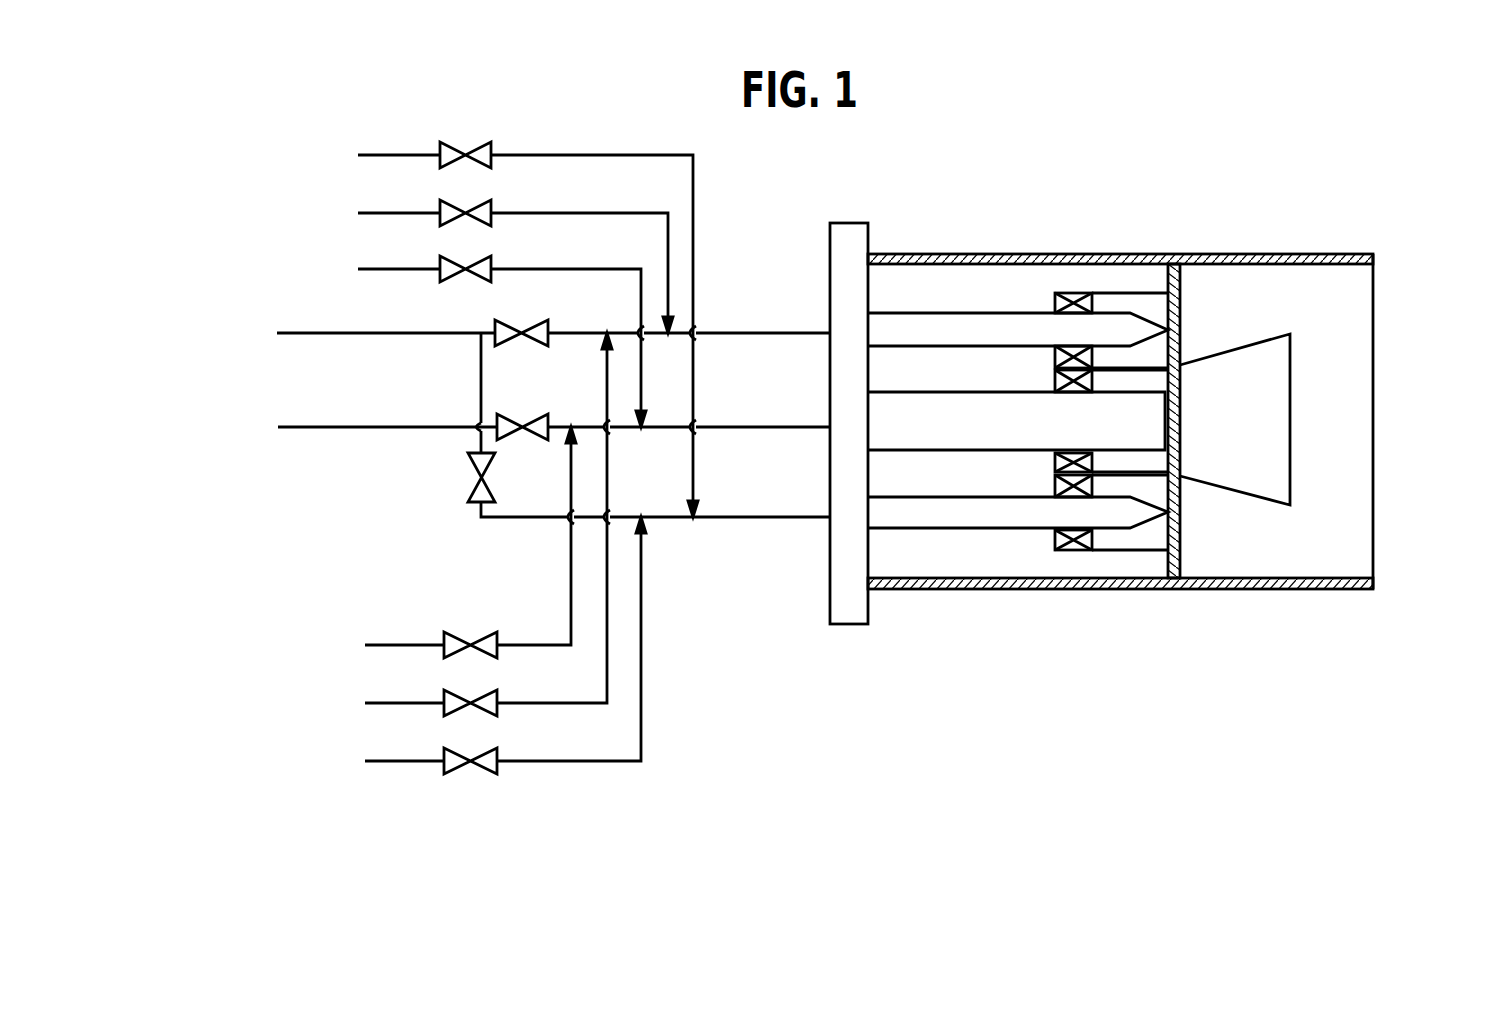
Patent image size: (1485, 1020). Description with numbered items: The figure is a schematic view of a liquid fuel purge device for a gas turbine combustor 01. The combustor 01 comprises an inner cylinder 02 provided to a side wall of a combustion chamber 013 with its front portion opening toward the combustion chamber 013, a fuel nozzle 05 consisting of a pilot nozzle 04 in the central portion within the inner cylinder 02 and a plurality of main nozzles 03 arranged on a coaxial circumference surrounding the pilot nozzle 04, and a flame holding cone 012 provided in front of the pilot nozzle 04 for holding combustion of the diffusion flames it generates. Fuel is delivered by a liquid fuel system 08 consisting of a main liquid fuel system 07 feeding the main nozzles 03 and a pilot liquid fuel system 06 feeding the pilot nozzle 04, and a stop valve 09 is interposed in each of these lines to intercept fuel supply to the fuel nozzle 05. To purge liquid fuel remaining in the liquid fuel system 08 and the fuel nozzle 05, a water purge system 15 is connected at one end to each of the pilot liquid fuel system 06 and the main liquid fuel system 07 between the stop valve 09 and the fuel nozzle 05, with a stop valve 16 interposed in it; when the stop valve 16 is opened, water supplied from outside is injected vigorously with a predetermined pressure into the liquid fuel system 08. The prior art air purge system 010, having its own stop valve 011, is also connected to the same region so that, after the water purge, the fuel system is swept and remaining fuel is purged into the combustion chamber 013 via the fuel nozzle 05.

The combustor 01 is at (1153, 228).
The inner cylinder 02 is at (956, 256).
The main nozzles 03 is at (960, 330).
The pilot nozzle 04 is at (980, 420).
The fuel nozzle 05 is at (1073, 143).
The pilot liquid fuel system 06 is at (539, 415).
The main liquid fuel system 07 is at (539, 318).
The liquid fuel system 08 is at (238, 310).
The stop valve 09 is at (470, 500).
The air purge system 010 is at (362, 613).
The stop valve 011 is at (499, 758).
The flame holding cone 012 is at (1230, 384).
The combustion chamber 013 is at (1455, 371).
The water purge system 15 is at (353, 142).
The stop valve 16 is at (493, 268).